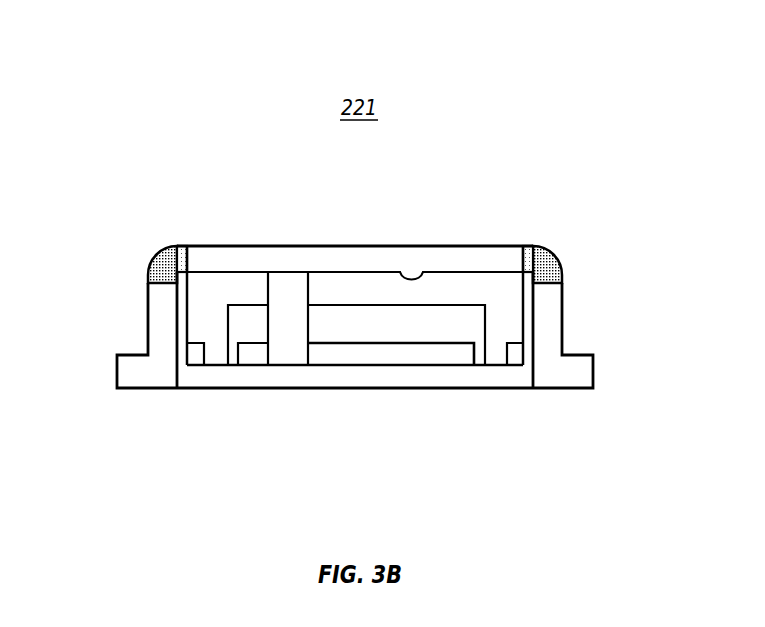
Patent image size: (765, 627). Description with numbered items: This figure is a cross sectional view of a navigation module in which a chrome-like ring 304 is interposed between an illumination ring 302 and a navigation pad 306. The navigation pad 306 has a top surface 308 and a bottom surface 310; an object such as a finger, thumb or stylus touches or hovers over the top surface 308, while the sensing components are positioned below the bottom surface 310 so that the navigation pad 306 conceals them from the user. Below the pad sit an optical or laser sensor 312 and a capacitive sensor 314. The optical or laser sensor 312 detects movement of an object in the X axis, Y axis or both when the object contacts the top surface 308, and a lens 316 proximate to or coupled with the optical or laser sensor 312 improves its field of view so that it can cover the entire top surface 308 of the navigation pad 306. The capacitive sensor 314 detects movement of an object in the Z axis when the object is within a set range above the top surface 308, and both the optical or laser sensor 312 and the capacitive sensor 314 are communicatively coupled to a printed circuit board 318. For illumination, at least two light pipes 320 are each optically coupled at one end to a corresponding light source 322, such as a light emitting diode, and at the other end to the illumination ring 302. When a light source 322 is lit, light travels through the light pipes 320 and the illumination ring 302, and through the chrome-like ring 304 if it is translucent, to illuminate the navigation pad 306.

The illumination ring 302 is at (163, 268).
The chrome-like ring 304 is at (182, 252).
The navigation pad 306 is at (355, 275).
The top surface 308 is at (348, 245).
The bottom surface 310 is at (418, 272).
The optical or laser sensor 312 is at (385, 353).
The capacitive sensor 314 is at (288, 355).
The lens 316 is at (450, 325).
The printed circuit board 318 is at (357, 378).
The light pipe 320 is at (183, 317).
The light source 322 is at (193, 353).